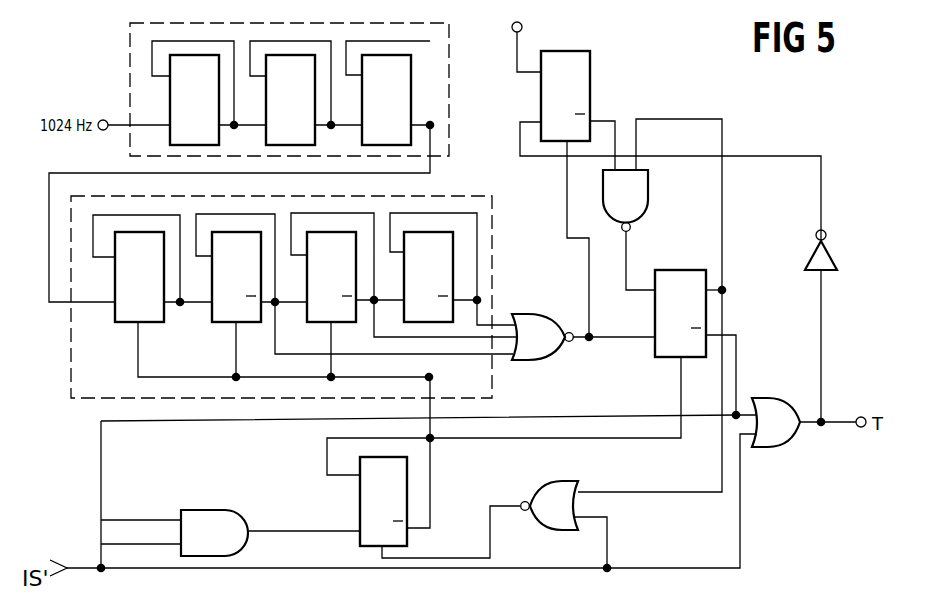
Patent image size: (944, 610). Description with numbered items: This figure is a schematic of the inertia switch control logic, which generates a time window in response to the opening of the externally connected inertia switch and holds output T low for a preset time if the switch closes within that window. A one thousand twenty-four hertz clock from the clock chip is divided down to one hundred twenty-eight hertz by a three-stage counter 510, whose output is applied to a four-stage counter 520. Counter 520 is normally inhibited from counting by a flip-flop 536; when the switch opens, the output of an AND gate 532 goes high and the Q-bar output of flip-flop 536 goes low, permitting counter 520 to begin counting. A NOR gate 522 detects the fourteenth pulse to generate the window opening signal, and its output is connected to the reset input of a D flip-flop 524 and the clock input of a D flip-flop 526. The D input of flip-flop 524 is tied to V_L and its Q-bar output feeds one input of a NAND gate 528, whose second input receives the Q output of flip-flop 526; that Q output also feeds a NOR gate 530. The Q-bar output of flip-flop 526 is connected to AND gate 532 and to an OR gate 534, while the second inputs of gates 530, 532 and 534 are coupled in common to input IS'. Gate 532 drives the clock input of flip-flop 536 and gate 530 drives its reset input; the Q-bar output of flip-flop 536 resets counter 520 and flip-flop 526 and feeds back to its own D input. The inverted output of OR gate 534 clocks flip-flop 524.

The three-stage counter 510 is at (128, 52).
The four-stage counter 520 is at (447, 193).
The NOR gate 522 is at (546, 349).
The D flip-flop 524 is at (590, 62).
The D flip-flop 526 is at (655, 352).
The NAND gate 528 is at (636, 203).
The NOR gate 530 is at (568, 517).
The AND gate 532 is at (220, 544).
The OR gate 534 is at (787, 434).
The D flip-flop 536 is at (360, 540).